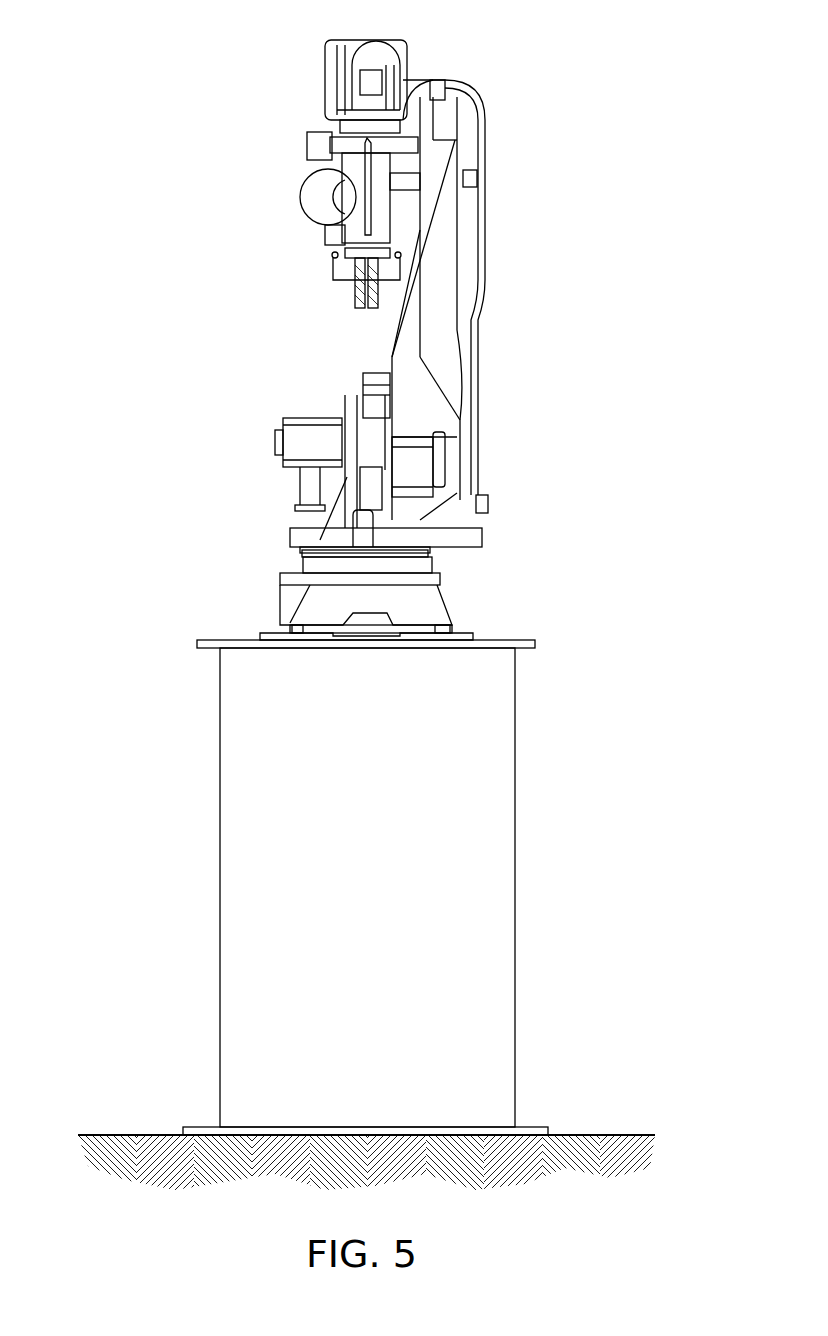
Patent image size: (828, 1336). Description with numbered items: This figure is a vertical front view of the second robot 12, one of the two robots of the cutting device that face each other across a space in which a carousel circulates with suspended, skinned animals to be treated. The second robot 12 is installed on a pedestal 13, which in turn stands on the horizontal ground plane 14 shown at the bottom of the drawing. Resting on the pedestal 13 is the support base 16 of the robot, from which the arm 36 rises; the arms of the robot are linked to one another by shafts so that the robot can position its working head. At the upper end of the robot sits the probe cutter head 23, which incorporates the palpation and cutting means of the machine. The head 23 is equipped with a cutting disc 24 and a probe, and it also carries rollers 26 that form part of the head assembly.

The second robot 12 is at (205, 85).
The pedestal 13 is at (455, 868).
The ground plane 14 is at (580, 1150).
The support base 16 is at (453, 607).
The probe cutter head 23 is at (283, 165).
The disc 24 is at (333, 255).
The rollers 26 is at (358, 308).
The arm 36 is at (441, 300).